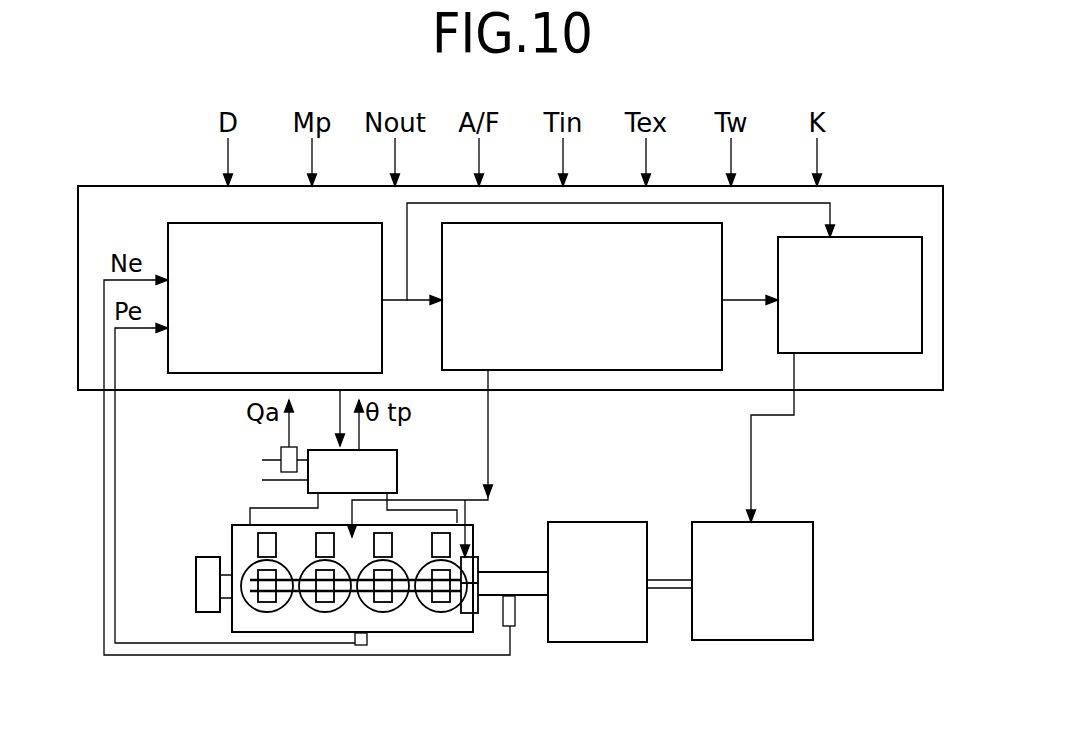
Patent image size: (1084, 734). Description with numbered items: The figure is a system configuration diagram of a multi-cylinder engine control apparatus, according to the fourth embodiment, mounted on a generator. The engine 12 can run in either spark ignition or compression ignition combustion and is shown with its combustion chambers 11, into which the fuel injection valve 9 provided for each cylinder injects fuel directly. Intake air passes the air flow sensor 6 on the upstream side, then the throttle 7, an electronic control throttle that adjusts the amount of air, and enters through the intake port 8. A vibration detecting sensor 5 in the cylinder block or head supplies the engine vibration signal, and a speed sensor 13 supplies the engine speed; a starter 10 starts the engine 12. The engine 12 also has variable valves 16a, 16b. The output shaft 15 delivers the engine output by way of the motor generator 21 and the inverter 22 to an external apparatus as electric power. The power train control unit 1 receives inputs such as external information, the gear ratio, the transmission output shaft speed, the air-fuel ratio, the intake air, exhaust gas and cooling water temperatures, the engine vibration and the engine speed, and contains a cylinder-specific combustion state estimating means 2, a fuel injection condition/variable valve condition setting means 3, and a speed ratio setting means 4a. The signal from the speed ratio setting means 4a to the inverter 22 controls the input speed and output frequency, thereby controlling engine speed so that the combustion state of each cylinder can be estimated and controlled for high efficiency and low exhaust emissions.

The power train control unit 1 is at (100, 186).
The cylinder-specific combustion state estimating means 2 is at (168, 238).
The fuel injection condition/variable valve condition setting means 3 is at (728, 233).
The speed ratio setting means 4a is at (867, 236).
The vibration detecting sensor 5 is at (358, 645).
The air flow sensor 6 is at (281, 464).
The throttle 7 is at (387, 458).
The intake port 8 is at (420, 512).
The fuel injection valve 9 is at (262, 543).
The starter 10 is at (196, 583).
The combustion chamber 11 is at (268, 612).
The engine 12 is at (398, 635).
The speed sensor 13 is at (518, 627).
The output shaft 15 is at (517, 580).
The variable valve 16a is at (473, 565).
The variable valve 16b is at (467, 613).
The motor generator 21 is at (623, 522).
The inverter 22 is at (795, 520).